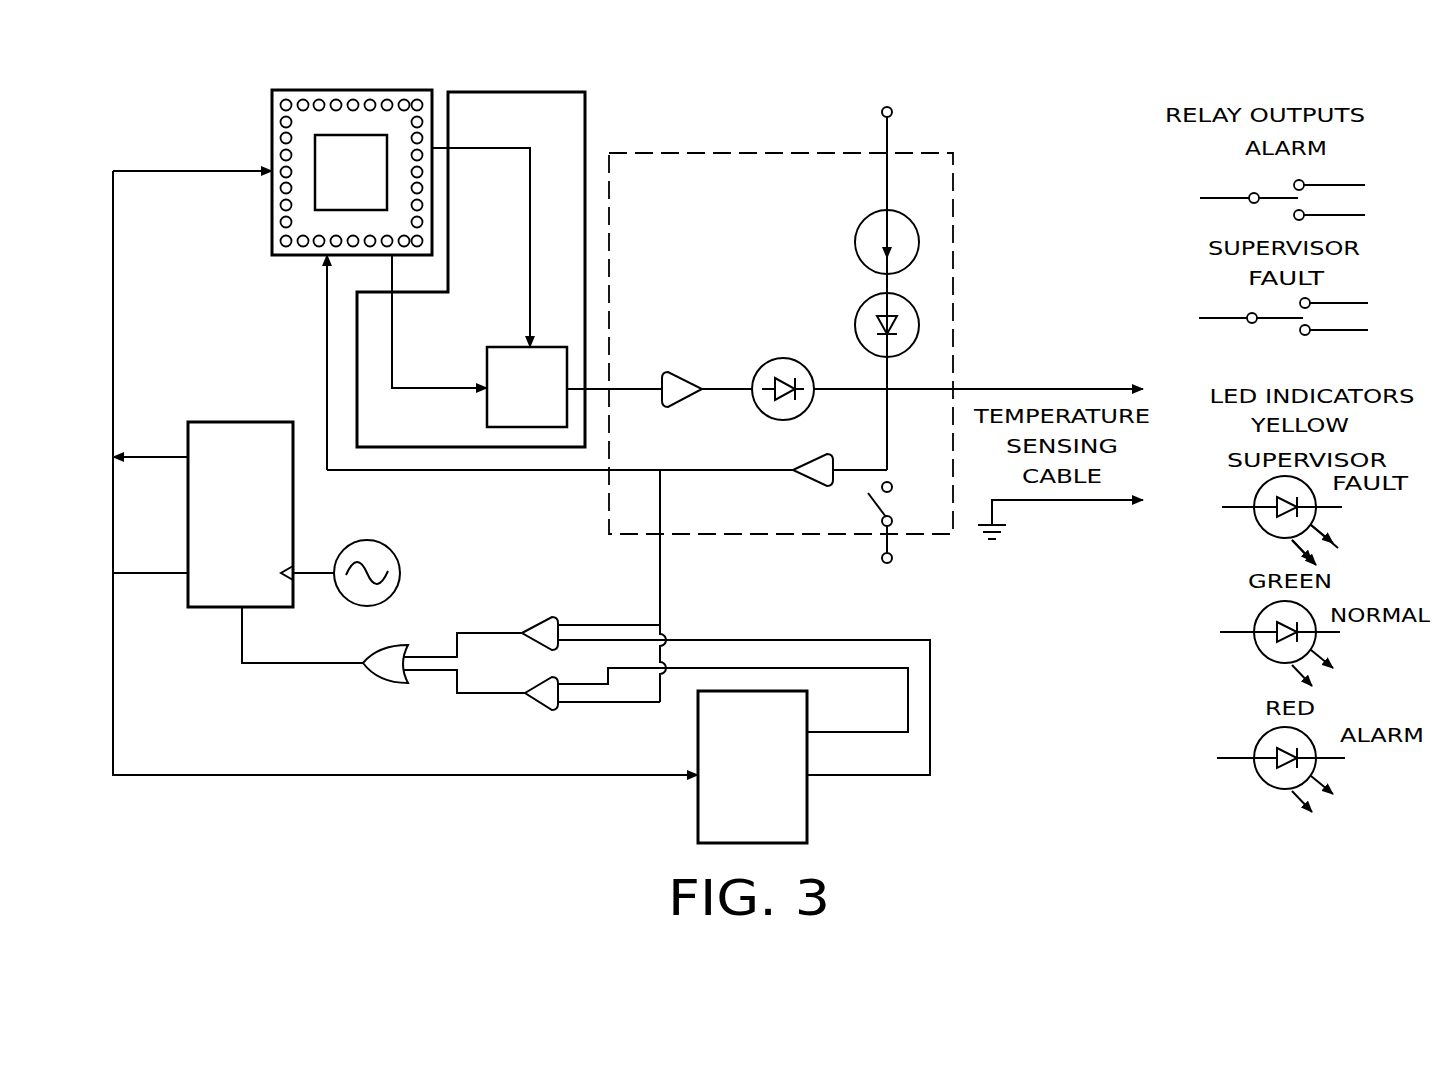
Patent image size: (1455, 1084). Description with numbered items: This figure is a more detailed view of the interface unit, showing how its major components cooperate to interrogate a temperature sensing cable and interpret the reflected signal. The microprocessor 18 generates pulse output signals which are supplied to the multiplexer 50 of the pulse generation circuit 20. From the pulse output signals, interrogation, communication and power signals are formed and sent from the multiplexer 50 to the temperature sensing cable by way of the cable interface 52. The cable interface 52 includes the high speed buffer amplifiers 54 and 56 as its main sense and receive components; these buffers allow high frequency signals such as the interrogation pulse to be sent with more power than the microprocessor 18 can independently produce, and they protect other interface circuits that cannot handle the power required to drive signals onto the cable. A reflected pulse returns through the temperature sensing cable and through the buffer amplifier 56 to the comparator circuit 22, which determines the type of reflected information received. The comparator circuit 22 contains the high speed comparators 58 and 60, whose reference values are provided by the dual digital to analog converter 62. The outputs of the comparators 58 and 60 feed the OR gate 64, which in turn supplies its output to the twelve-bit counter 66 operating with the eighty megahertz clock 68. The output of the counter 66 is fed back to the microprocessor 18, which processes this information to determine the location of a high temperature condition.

The microprocessor 18 is at (313, 90).
The pulse generation circuit 20 is at (548, 92).
The comparator circuit 22 is at (410, 740).
The multiplexer 50 is at (512, 347).
The cable interface 52 is at (956, 166).
The high speed buffer amplifier 54 is at (686, 378).
The high speed buffer amplifier 56 is at (804, 486).
The high speed comparator 58 is at (526, 624).
The high speed comparator 60 is at (535, 705).
The dual digital to analog converter 62 is at (698, 742).
The OR gate 64 is at (391, 688).
The 12-bit counter 66 is at (240, 422).
The 80 MHz clock 68 is at (382, 545).